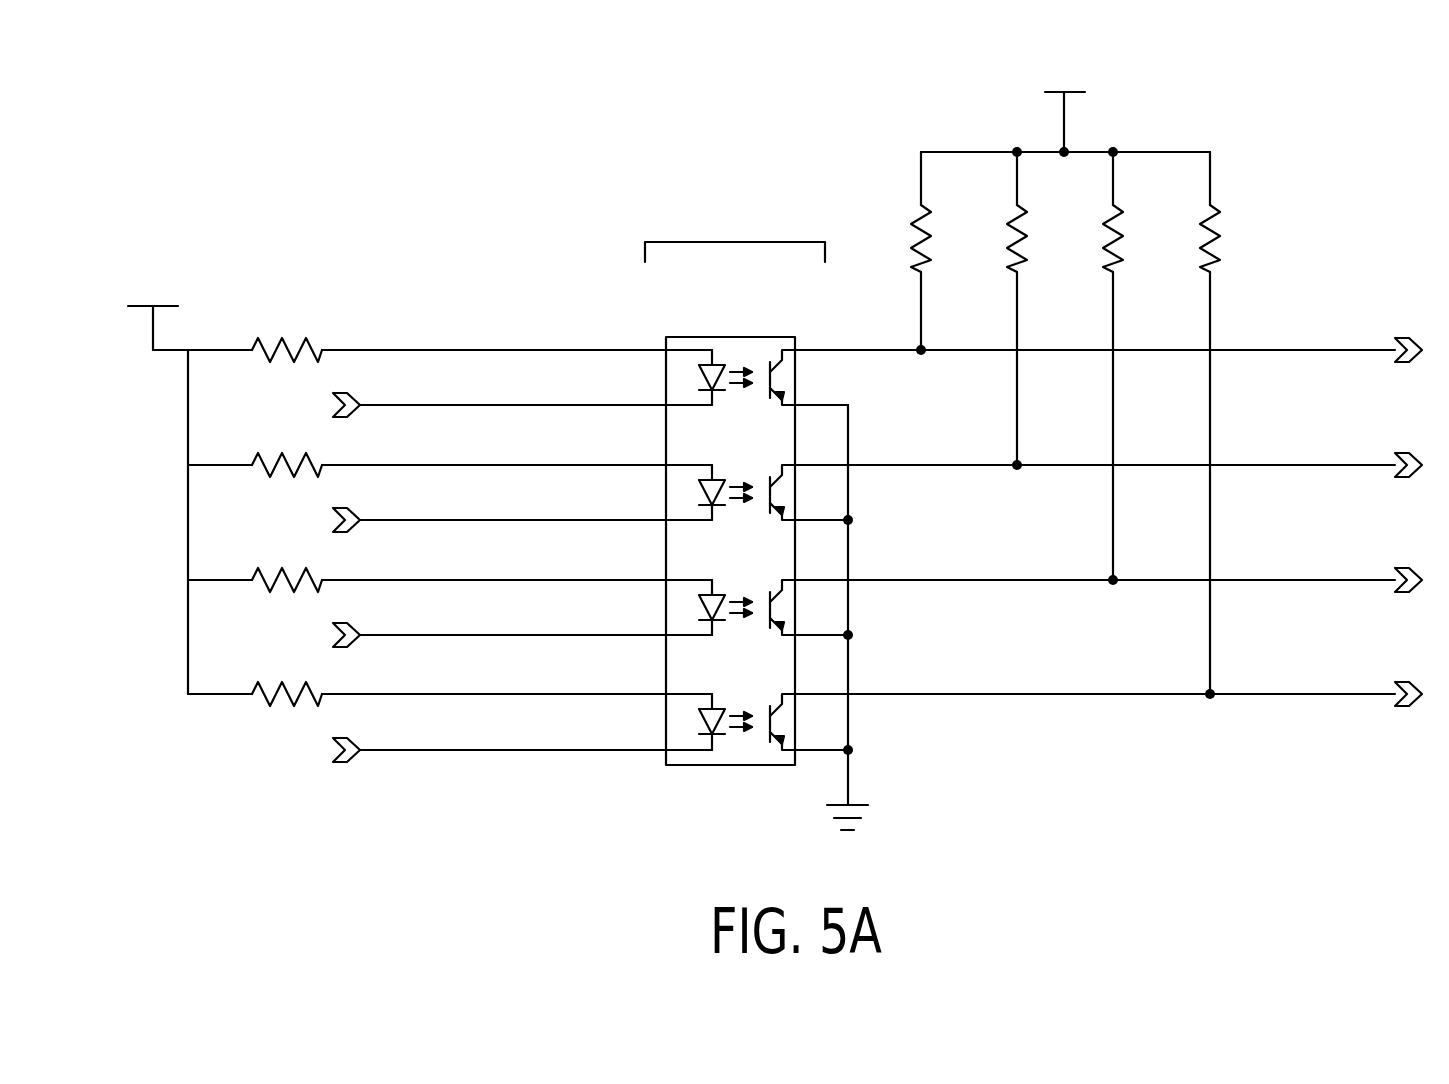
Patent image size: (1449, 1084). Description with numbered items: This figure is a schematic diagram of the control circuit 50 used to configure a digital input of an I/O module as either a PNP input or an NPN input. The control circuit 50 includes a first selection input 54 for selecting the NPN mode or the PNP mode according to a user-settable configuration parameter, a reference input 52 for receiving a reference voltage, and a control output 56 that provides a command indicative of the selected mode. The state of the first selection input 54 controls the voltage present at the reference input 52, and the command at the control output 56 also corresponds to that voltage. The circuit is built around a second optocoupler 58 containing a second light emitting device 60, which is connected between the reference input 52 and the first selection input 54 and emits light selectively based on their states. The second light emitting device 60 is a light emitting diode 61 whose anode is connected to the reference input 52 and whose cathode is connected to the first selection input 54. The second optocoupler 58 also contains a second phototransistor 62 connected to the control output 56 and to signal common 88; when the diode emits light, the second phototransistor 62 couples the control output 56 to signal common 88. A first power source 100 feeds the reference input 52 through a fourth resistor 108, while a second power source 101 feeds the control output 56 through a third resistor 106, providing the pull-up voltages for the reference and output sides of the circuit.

The control circuit 50 is at (525, 118).
The first power source 100 is at (152, 278).
The fourth resistor 108 is at (282, 276).
The reference input 52 is at (640, 340).
The first selection input 54 is at (385, 408).
The second optocoupler 58 is at (734, 240).
The second light emitting device 60 is at (684, 410).
The light emitting diode 61 is at (715, 378).
The second phototransistor 62 is at (798, 374).
The control output 56 is at (1343, 355).
The third resistor 106 is at (873, 195).
The second power source 101 is at (1060, 64).
The signal common 88 is at (868, 822).